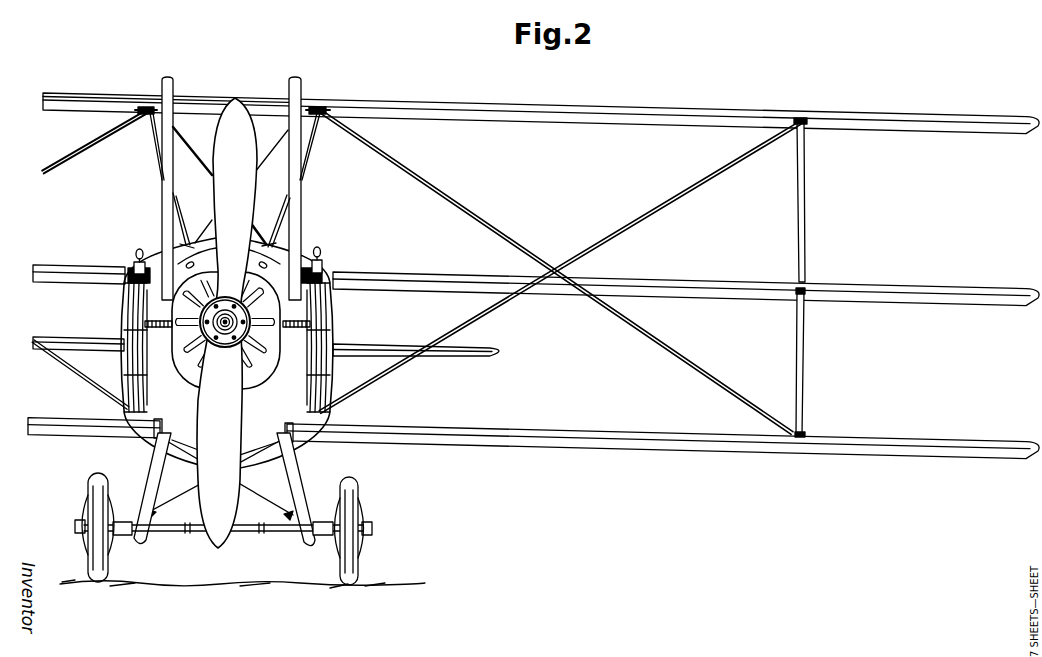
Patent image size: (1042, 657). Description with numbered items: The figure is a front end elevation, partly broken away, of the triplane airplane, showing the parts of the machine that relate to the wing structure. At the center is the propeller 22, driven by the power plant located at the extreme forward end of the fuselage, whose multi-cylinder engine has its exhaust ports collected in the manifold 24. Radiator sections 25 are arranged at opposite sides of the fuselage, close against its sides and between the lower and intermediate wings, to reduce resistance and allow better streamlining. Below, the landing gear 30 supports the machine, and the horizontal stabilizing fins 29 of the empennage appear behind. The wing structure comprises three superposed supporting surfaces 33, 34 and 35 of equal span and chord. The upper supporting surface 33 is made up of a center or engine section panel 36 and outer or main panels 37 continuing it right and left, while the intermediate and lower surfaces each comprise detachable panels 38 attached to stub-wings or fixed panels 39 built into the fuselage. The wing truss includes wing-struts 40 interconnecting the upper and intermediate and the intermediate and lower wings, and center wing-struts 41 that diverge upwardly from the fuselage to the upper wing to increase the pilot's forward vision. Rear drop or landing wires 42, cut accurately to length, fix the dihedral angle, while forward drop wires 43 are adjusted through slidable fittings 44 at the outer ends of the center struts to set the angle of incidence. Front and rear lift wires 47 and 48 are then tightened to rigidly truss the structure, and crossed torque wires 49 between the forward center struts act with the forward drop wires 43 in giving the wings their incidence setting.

The propeller 22 is at (250, 187).
The exhaust manifold 24 is at (161, 190).
The radiator sections 25 is at (326, 307).
The horizontal stabilizing fins 29 is at (393, 346).
The landing gear 30 is at (357, 502).
The upper supporting surface 33 is at (702, 107).
The intermediate supporting surface 34 is at (711, 279).
The lower supporting surface 35 is at (597, 431).
The center or engine section panel 36 is at (207, 99).
The outer or main panels 37 is at (72, 96).
The detachable panels 38 is at (454, 275).
The stub-wings or fixed panels 39 is at (314, 256).
The wing-struts 40 is at (806, 202).
The center wing-struts 41 is at (305, 152).
The rear drop or landing wires 42 is at (63, 165).
The forward drop wires 43 is at (61, 165).
The slidable fittings 44 is at (323, 108).
The front lift wires 47 is at (639, 219).
The rear lift wires 48 is at (681, 195).
The crossed torque wires 49 is at (273, 148).